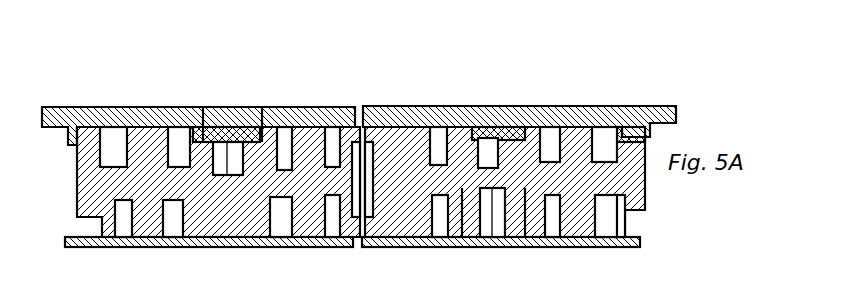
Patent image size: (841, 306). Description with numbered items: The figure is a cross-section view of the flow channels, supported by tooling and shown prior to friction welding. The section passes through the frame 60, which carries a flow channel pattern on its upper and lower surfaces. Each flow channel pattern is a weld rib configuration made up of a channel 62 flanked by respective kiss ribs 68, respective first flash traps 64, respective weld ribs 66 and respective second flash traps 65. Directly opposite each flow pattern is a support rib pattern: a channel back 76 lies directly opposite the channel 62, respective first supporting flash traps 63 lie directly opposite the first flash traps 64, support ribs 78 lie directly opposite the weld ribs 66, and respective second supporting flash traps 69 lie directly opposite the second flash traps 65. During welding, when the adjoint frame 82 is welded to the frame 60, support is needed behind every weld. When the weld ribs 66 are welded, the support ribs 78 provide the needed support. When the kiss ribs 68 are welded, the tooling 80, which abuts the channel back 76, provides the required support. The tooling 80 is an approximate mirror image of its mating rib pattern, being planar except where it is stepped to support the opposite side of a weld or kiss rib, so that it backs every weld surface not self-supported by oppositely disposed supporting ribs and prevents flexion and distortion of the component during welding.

The frame 60 is at (77, 179).
The channel 62 is at (238, 107).
The first supporting flash traps 63 is at (447, 107).
The first flash traps 64 is at (170, 107).
The second flash traps 65 is at (113, 107).
The weld ribs 66 is at (145, 107).
The kiss ribs 68 is at (203, 107).
The second supporting flash traps 69 is at (386, 107).
The channel back 76 is at (470, 106).
The support ribs 78 is at (418, 106).
The tooling 80 is at (340, 107).
The adjoint frame 82 is at (640, 241).